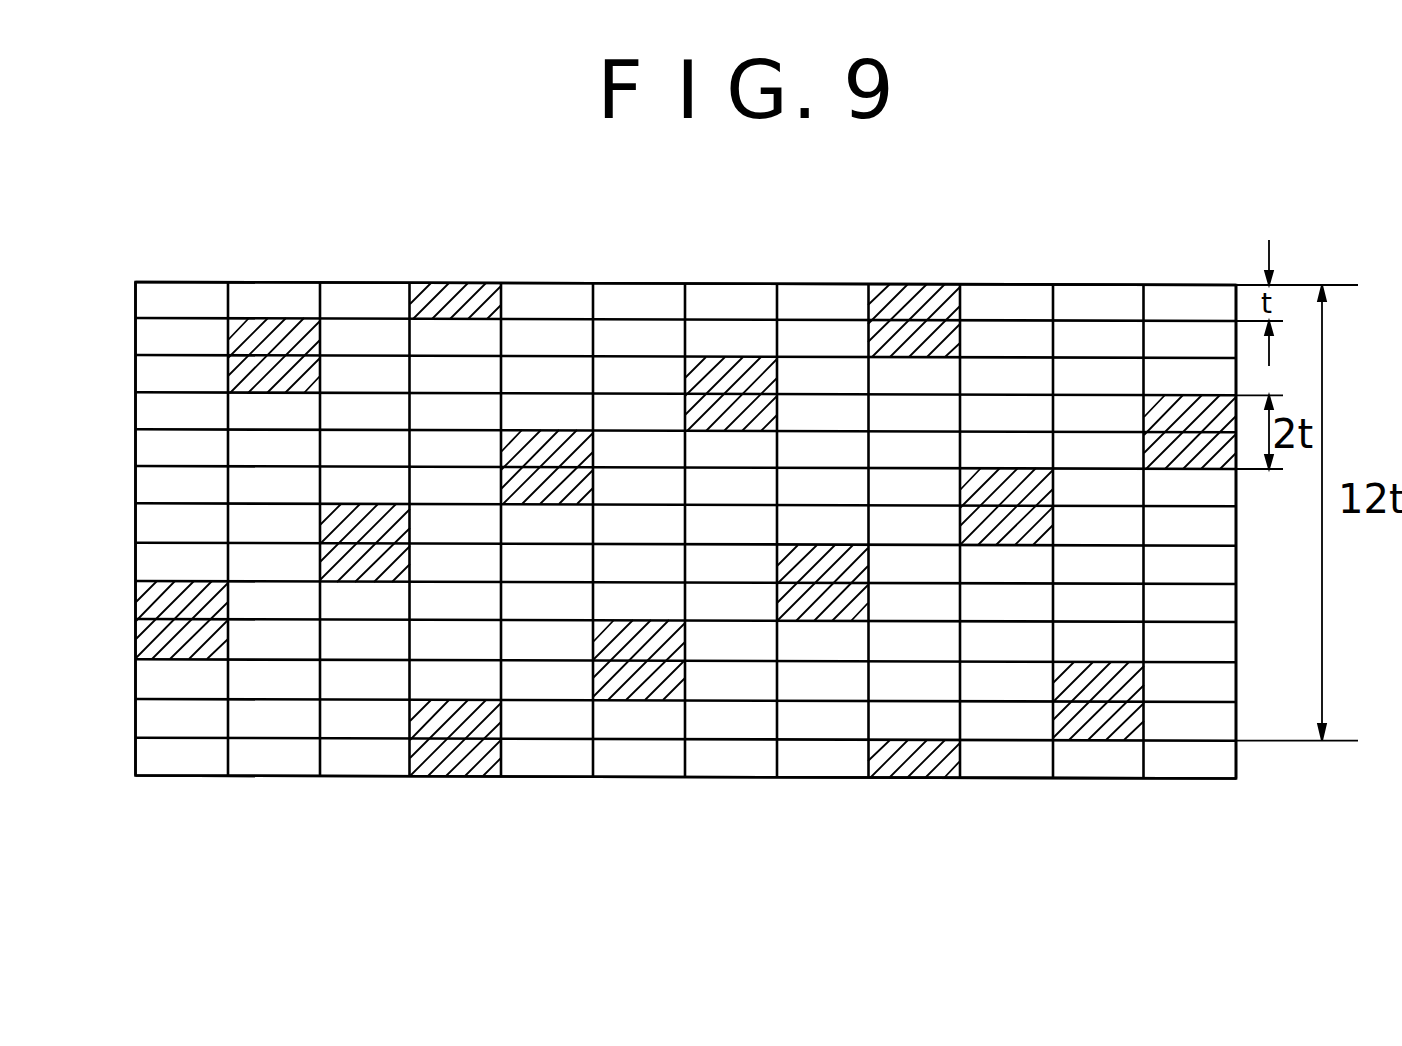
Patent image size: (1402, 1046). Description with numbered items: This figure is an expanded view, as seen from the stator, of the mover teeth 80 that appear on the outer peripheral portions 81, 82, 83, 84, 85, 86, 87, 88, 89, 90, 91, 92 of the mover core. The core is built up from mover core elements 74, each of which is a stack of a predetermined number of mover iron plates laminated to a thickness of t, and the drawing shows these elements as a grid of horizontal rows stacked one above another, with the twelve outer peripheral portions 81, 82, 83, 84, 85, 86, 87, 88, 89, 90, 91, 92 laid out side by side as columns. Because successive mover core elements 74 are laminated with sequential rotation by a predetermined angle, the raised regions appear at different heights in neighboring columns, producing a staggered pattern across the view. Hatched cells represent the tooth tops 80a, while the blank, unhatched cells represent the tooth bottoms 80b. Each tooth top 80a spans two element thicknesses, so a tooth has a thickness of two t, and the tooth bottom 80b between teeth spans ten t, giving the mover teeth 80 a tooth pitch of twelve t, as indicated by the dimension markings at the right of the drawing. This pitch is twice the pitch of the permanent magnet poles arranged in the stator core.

The mover core element 74 is at (1223, 567).
The mover teeth 80 is at (1000, 645).
The tooth top 80a is at (1102, 727).
The tooth bottom 80b is at (686, 575).
The outer peripheral portion 81 is at (177, 282).
The outer peripheral portion 82 is at (271, 282).
The outer peripheral portion 83 is at (358, 282).
The outer peripheral portion 84 is at (451, 282).
The outer peripheral portion 85 is at (543, 283).
The outer peripheral portion 86 is at (630, 283).
The outer peripheral portion 87 is at (727, 283).
The outer peripheral portion 88 is at (818, 283).
The outer peripheral portion 89 is at (905, 284).
The outer peripheral portion 90 is at (998, 284).
The outer peripheral portion 91 is at (1098, 533).
The outer peripheral portion 92 is at (1187, 285).